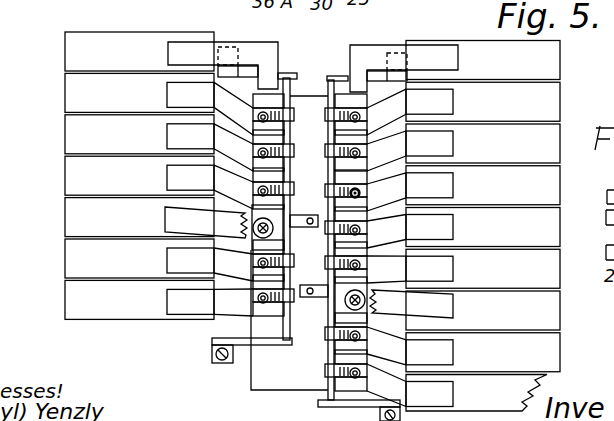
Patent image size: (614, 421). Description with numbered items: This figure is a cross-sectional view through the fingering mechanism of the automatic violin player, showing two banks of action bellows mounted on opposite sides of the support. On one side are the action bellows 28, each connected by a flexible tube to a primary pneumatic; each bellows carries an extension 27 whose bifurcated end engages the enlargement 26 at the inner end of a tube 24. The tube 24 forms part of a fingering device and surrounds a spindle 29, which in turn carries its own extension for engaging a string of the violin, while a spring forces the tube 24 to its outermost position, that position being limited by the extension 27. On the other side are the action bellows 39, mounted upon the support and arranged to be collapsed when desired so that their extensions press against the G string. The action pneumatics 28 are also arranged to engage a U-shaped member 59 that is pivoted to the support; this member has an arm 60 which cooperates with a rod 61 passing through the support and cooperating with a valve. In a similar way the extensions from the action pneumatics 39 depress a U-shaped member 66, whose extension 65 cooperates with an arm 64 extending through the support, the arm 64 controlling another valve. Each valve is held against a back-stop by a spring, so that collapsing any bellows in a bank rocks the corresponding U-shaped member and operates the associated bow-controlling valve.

The action bellows 39 is at (62, 210).
The action bellows 28 is at (552, 230).
The extension 27 is at (415, 97).
The enlargement 26 is at (332, 118).
The tube 24 is at (363, 190).
The spindle 29 is at (347, 191).
The U-shaped member 59 is at (345, 77).
The extension 65 is at (297, 215).
The arm 64 is at (310, 227).
The rod 61 is at (308, 285).
The arm 60 is at (313, 297).
The U-shaped member 66 is at (286, 340).